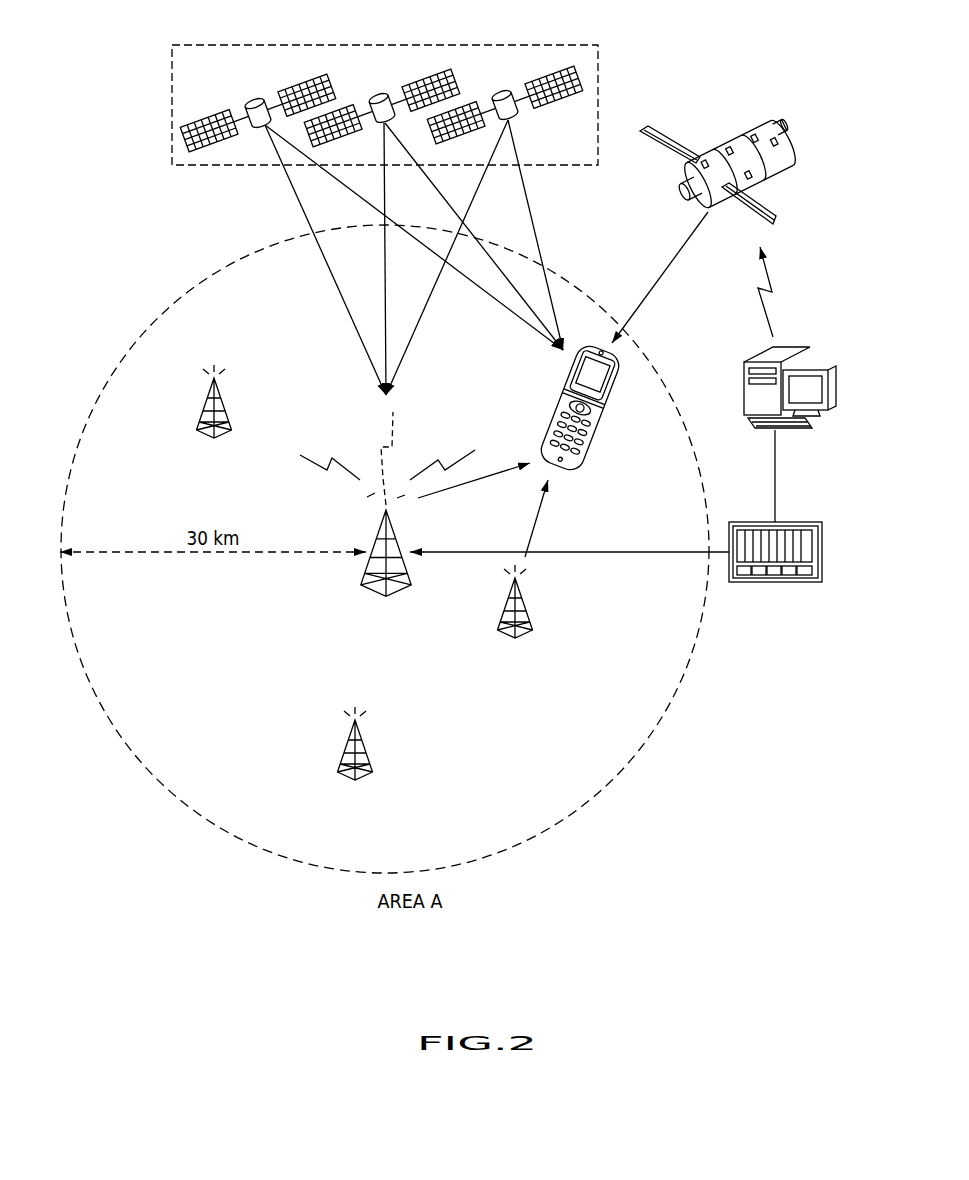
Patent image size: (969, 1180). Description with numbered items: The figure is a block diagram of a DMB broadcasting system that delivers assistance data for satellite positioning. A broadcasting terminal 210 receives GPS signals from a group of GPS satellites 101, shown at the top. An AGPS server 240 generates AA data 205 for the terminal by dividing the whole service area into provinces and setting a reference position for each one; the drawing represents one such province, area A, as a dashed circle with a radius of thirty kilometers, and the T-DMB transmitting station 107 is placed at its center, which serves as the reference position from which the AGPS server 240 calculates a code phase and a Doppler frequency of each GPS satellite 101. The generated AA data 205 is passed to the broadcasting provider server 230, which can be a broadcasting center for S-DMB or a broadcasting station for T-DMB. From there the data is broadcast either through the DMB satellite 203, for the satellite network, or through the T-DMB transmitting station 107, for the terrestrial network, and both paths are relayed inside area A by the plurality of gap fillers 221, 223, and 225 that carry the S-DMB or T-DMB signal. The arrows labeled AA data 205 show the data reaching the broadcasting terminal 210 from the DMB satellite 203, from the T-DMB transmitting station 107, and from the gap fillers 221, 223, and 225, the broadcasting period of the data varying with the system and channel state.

The GPS satellite 101 is at (385, 92).
The DMB satellite 203 is at (755, 173).
The AA data 205 is at (563, 384).
The broadcasting terminal 210 is at (609, 420).
The AGPS server 240 is at (809, 434).
The broadcasting provider server 230 is at (787, 592).
The T-DMB transmitting station 107 is at (373, 532).
The gap filler 225 is at (214, 430).
The gap filler 221 is at (530, 627).
The gap filler 223 is at (353, 769).